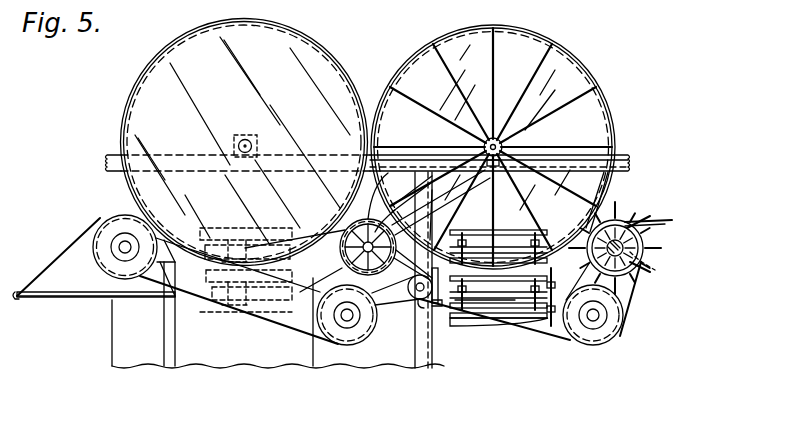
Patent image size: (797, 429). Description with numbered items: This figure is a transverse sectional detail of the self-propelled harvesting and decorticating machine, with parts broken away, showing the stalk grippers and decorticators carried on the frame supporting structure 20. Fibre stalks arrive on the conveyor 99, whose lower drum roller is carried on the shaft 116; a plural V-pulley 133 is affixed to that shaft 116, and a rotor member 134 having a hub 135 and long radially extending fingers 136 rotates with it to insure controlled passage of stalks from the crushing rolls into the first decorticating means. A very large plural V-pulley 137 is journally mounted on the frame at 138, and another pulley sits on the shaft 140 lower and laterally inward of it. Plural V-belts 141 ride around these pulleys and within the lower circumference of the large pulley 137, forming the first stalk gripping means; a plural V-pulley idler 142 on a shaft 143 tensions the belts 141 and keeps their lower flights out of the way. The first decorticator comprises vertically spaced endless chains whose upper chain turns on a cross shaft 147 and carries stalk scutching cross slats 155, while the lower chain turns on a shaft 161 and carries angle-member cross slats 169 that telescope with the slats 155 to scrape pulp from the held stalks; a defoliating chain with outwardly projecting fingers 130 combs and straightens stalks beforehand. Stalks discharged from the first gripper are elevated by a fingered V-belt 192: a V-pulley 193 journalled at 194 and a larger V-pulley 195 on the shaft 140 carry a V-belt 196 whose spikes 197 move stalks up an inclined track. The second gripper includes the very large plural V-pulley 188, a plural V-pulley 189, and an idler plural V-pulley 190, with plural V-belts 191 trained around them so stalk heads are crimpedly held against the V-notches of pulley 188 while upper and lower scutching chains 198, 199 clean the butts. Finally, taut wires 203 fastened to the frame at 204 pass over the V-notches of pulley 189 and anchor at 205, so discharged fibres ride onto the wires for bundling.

The frame supporting structure 20 is at (637, 150).
The conveyor 99 is at (664, 226).
The shaft 116 is at (650, 222).
The outwardly projecting fingers 130 is at (553, 292).
The plural V-pulley 133 is at (645, 250).
The rotor member 134 is at (625, 200).
The hub 135 is at (650, 272).
The radially extending fingers 136 is at (637, 220).
The plural V-pulley 137 is at (583, 64).
The journal mounting 138 is at (505, 150).
The shaft 140 is at (340, 262).
The plural V-belts 141 is at (636, 302).
The plural V-pulley idler 142 is at (618, 335).
The shaft 143 is at (594, 322).
The shaft 147 is at (503, 250).
The stalk scutching cross slats 155 is at (473, 230).
The shaft 161 is at (518, 308).
The cross slats 169 is at (492, 322).
The plural V-pulley 188 is at (312, 46).
The plural V-pulley 189 is at (110, 270).
The idler plural V-pulley 190 is at (347, 336).
The plural V-belts 191 is at (290, 330).
The fingered V-belt 192 is at (405, 300).
The V-pulley 193 is at (440, 305).
The journal 194 is at (415, 305).
The V-pulley 195 is at (325, 276).
The V-belt 196 is at (435, 235).
The fingers or spikes 197 is at (403, 203).
The upper scutching chain 198 is at (237, 230).
The lower scutching chain 199 is at (239, 321).
The taut wires 203 is at (72, 255).
The wire fastening point 204 is at (158, 290).
The wire attachment point 205 is at (19, 300).